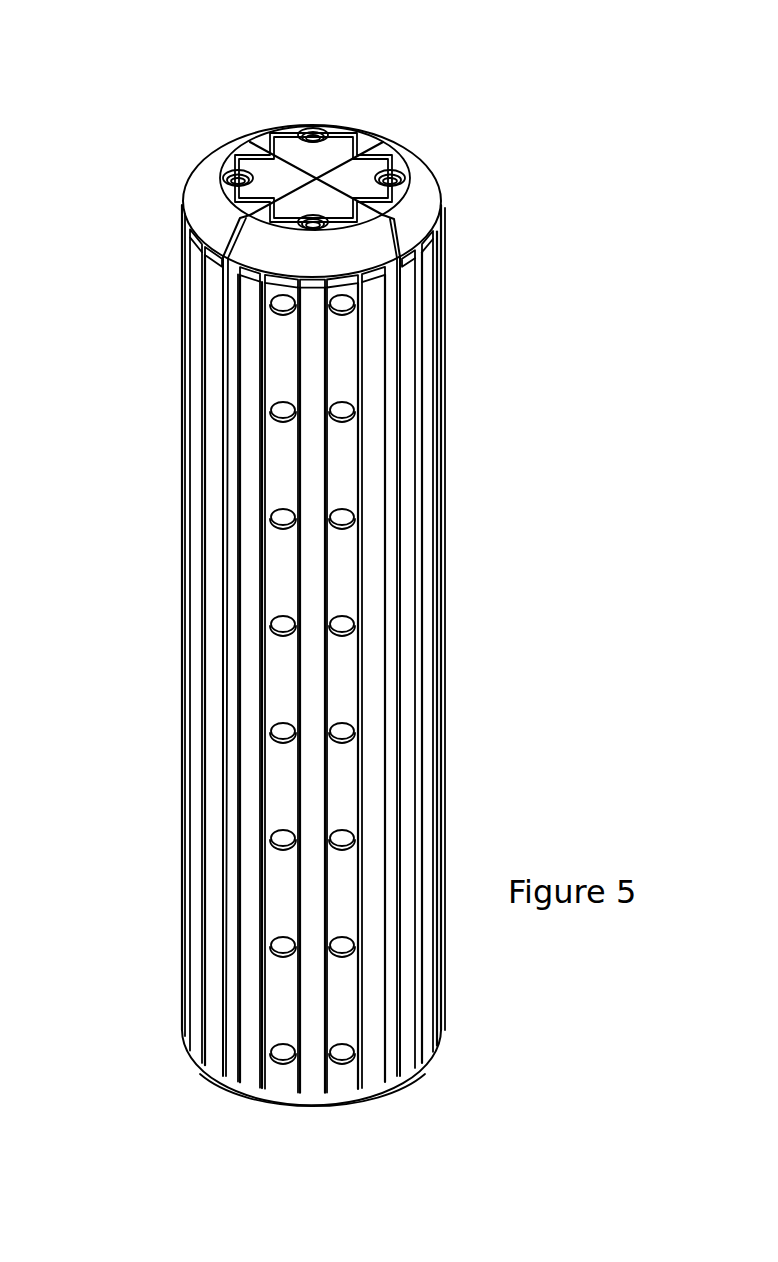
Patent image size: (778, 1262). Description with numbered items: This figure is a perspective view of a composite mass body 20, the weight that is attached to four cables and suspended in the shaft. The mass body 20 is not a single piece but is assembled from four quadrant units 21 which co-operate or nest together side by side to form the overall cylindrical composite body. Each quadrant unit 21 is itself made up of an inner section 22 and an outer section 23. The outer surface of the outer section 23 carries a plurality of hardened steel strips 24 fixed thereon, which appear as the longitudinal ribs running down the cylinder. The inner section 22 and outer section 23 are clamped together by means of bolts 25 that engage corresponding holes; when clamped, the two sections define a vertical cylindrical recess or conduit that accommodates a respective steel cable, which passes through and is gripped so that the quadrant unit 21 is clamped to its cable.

The composite mass body 20 is at (141, 129).
The quadrant unit 21 is at (203, 197).
The inner section 22 is at (363, 172).
The outer section 23 is at (420, 198).
The hardened steel strips 24 is at (382, 333).
The bolts 25 is at (345, 412).